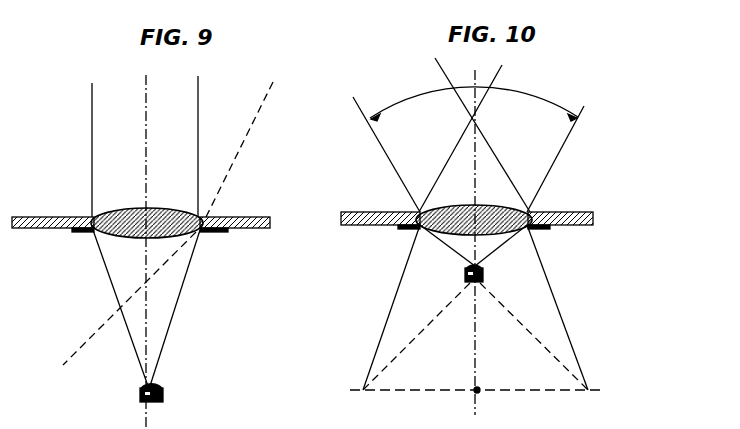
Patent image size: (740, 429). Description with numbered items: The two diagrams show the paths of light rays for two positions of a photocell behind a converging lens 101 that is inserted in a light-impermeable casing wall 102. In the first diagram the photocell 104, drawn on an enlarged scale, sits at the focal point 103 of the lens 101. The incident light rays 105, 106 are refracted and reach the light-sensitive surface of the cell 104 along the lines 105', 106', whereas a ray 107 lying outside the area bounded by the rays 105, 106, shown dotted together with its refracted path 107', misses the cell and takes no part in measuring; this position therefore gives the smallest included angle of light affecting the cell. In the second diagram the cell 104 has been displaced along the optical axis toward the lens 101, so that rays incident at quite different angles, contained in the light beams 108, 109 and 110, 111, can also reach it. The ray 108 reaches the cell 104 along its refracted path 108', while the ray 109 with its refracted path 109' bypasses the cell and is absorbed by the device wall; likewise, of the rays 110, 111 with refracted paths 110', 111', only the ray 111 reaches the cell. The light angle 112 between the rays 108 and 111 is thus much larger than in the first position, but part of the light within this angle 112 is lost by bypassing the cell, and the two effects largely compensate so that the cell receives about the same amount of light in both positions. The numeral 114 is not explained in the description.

In FIG. 9, the converging lens 101 is at (126, 209).
In FIG. 10, the converging lens 101 is at (458, 209).
In FIG. 9, the light-impermeable casing wall 102 is at (250, 224).
In FIG. 10, the light-impermeable casing wall 102 is at (593, 222).
In FIG. 9, the focal point 103 is at (163, 391).
In FIG. 10, the focal point 103 is at (476, 392).
In FIG. 9, the photocell 104 is at (143, 400).
In FIG. 10, the photocell 104 is at (472, 284).
In FIG. 9, the incident light ray 105 is at (70, 150).
In FIG. 9, the incident light ray 106 is at (217, 146).
In FIG. 9, the ray outside the measuring area 107 is at (252, 149).
In FIG. 9, the refracted ray 105' is at (105, 308).
In FIG. 9, the refracted ray 106' is at (195, 308).
In FIG. 9, the refracted ray outside the measuring area 107' is at (118, 298).
In FIG. 10, the incident light ray 108 is at (386, 154).
In FIG. 10, the incident light ray 109 is at (462, 135).
In FIG. 10, the incident light ray 110 is at (487, 138).
In FIG. 10, the incident light ray 111 is at (569, 159).
In FIG. 10, the light angle 112 is at (476, 88).
In FIG. 10, the refracted ray 108' is at (446, 249).
In FIG. 10, the refracted ray 109' is at (577, 307).
In FIG. 10, the refracted ray 110' is at (382, 307).
In FIG. 10, the refracted ray 111' is at (502, 249).
In FIG. 9, the sheet numeral 114 is at (309, 415).